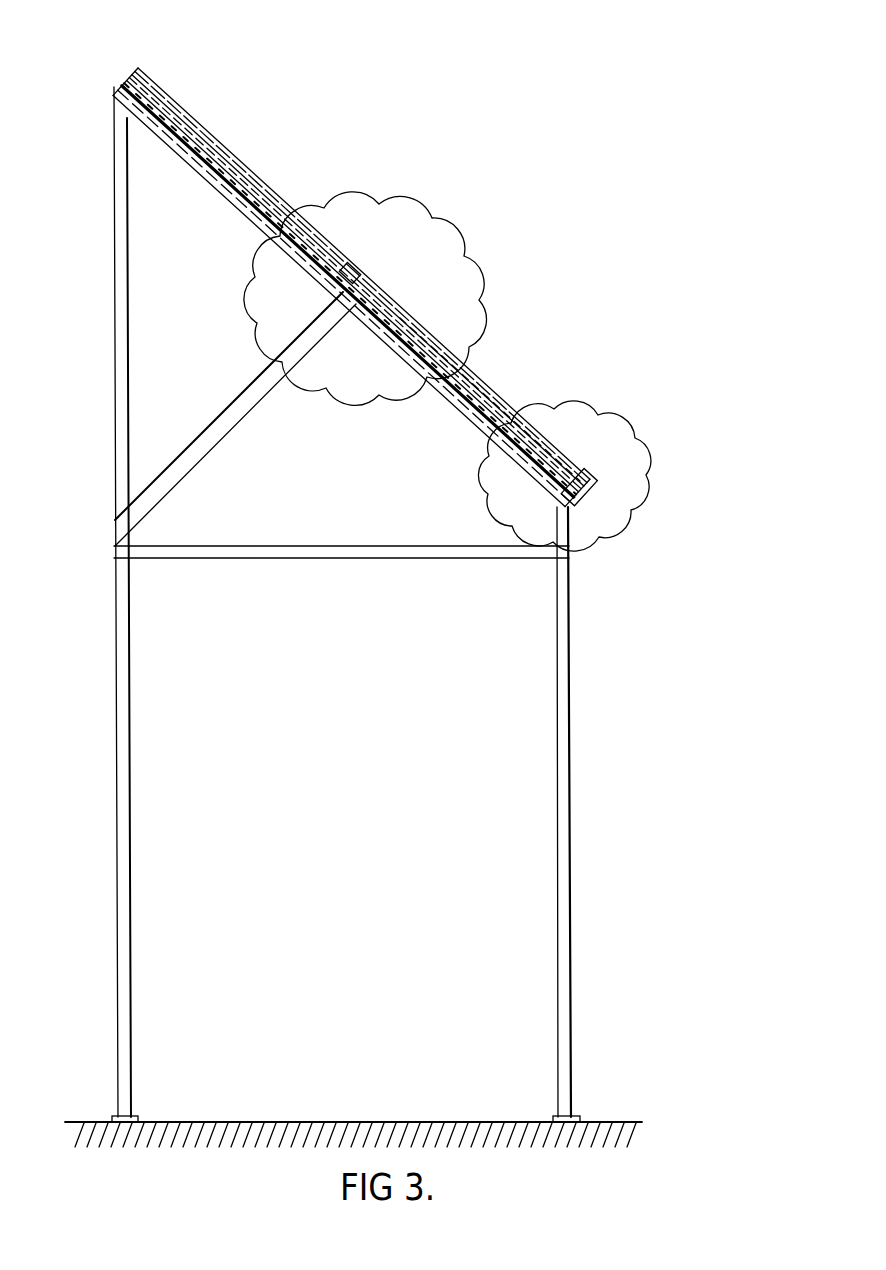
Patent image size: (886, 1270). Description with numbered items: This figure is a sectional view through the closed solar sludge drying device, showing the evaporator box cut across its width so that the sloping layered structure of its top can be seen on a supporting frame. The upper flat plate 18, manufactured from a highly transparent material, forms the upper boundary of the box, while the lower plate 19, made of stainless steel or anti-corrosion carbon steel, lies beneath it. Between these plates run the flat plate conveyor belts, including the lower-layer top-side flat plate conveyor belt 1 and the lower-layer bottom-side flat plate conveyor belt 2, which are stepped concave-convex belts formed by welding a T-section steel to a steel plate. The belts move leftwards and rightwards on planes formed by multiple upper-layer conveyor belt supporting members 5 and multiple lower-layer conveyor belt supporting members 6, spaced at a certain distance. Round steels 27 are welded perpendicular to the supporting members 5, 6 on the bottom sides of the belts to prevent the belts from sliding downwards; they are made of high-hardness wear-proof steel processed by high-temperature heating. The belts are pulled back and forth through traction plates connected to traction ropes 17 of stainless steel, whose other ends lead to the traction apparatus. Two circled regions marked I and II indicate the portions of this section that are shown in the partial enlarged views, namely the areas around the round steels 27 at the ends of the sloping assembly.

The lower-layer top-side flat plate conveyor belt 1 is at (168, 150).
The lower-layer bottom-side flat plate conveyor belt 2 is at (290, 265).
The upper-layer conveyor belt supporting member 5 is at (118, 87).
The lower-layer conveyor belt supporting member 6 is at (387, 352).
The traction rope 17 is at (543, 450).
The upper flat plate 18 is at (437, 340).
The lower plate 19 is at (460, 428).
The round steel 27 is at (350, 273).
The detail view I is at (640, 507).
The detail view II is at (480, 310).